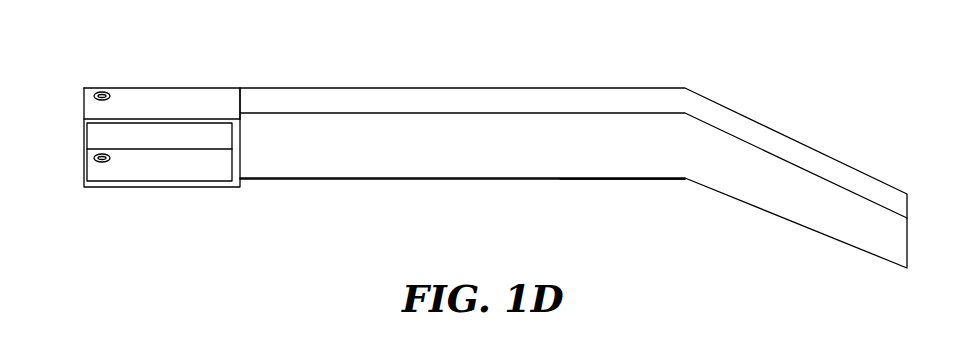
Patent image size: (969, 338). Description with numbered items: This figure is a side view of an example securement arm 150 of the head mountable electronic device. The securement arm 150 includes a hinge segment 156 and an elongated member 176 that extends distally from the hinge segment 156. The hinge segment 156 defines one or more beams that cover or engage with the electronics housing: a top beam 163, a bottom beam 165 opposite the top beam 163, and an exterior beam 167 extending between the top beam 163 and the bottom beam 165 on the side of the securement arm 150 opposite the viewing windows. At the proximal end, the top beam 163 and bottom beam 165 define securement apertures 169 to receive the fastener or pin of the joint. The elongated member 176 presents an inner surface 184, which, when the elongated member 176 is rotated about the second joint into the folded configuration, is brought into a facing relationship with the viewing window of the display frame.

The securement arm 150 is at (425, 65).
The hinge segment 156 is at (165, 87).
The top beam 163 is at (213, 95).
The bottom beam 165 is at (165, 165).
The exterior beam 167 is at (93, 137).
The securement apertures 169 is at (102, 92).
The elongated member 176 is at (573, 181).
The inner surface 184 is at (442, 163).